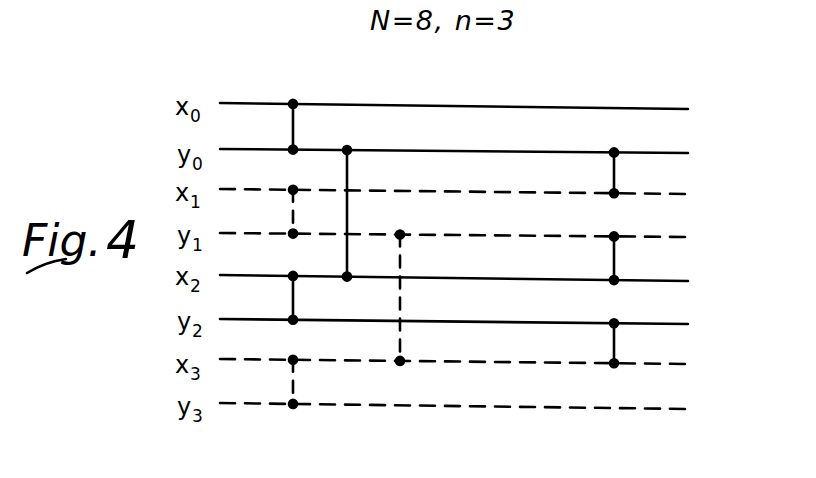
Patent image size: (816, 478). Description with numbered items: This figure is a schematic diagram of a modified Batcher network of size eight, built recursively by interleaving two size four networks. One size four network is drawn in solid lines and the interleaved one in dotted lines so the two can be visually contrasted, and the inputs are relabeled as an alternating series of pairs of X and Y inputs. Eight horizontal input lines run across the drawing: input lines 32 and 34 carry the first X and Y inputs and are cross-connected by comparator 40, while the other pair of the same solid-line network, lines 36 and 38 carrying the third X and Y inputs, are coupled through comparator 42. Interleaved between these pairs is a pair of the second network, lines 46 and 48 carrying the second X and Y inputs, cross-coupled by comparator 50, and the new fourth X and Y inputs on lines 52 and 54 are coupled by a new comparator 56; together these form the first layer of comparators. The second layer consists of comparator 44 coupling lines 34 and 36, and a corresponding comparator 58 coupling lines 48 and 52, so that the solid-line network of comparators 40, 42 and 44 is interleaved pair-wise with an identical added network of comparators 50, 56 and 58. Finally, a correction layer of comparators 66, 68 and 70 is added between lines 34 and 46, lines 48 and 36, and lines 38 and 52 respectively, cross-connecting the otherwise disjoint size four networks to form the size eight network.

The input line 32 is at (268, 104).
The input line 34 is at (575, 152).
The input line 36 is at (668, 281).
The input line 38 is at (668, 324).
The line 46 is at (668, 195).
The line 48 is at (467, 235).
The line 52 is at (523, 362).
The line 54 is at (580, 408).
The comparator 40 is at (295, 122).
The comparator 42 is at (293, 303).
The comparator 44 is at (349, 166).
The comparator 50 is at (293, 213).
The comparator 56 is at (293, 380).
The comparator 58 is at (400, 340).
The comparator 66 is at (615, 178).
The comparator 68 is at (614, 265).
The comparator 70 is at (614, 342).